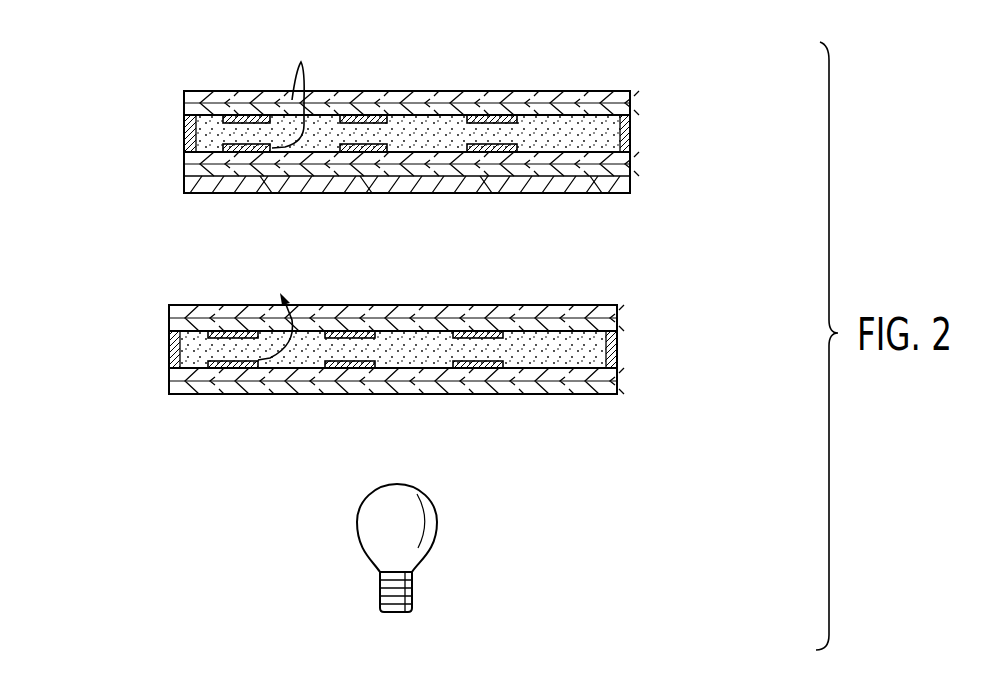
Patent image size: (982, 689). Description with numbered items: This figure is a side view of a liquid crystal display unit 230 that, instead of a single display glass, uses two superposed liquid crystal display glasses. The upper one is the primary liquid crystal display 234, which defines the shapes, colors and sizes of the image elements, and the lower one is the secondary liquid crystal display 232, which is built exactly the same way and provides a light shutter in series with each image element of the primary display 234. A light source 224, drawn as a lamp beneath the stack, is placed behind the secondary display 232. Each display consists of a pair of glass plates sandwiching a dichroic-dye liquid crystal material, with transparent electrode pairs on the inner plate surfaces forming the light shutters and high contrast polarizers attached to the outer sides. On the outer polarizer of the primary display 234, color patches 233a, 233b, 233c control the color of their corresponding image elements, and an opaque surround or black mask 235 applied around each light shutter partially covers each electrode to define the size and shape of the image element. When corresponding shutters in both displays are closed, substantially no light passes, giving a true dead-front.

The light source 224 is at (430, 552).
The liquid crystal display unit 230 is at (157, 75).
The secondary liquid crystal display 232 is at (640, 355).
The color patch 233a is at (247, 195).
The color patch 233b is at (370, 195).
The color patch 233c is at (487, 195).
The primary liquid crystal display 234 is at (655, 140).
The opaque surround (black mask) 235 is at (585, 196).